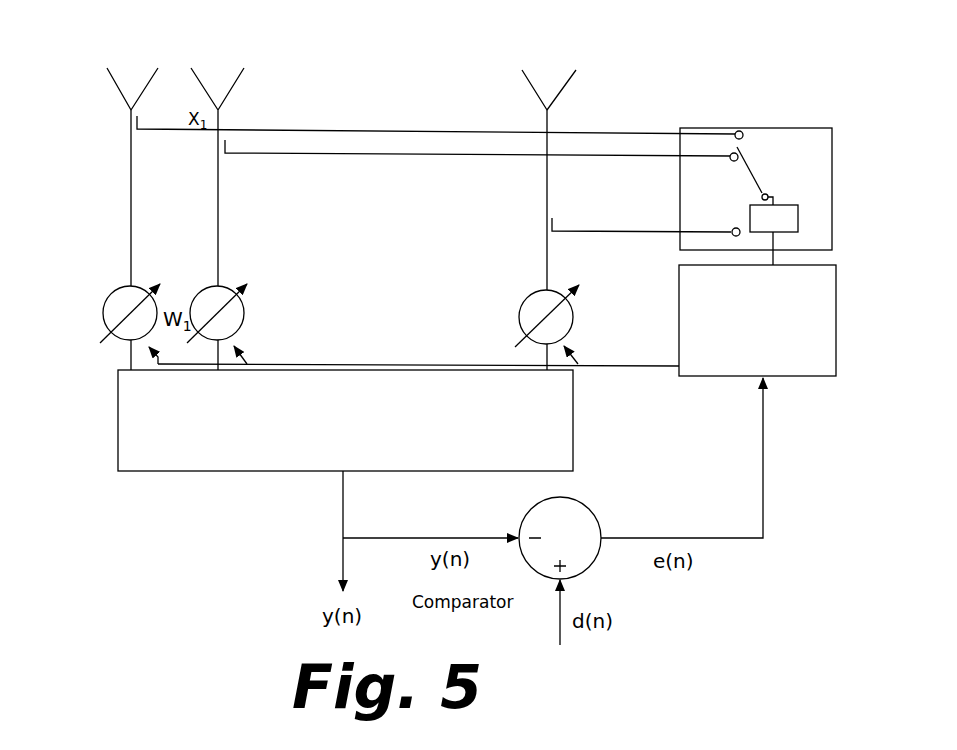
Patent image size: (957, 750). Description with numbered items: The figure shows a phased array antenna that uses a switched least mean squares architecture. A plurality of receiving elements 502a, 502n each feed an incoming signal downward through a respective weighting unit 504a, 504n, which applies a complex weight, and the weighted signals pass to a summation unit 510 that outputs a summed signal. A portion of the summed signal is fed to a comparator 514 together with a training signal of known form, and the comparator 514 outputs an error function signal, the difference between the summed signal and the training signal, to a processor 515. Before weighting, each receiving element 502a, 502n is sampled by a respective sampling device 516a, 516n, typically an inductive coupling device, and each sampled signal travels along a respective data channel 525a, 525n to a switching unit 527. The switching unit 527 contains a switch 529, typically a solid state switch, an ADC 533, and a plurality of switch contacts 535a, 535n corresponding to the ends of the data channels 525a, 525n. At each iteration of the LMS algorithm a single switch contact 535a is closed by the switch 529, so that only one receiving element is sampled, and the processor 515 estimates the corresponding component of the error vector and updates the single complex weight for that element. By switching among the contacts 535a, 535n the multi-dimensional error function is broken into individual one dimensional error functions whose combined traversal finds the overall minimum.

The receiving element 502a is at (133, 90).
The receiving element 502n is at (550, 87).
The weighting unit 504a is at (118, 305).
The weighting unit 504n is at (523, 310).
The summation unit 510 is at (138, 423).
The comparator 514 is at (577, 522).
The processor 515 is at (825, 320).
The sampling device 516a is at (128, 128).
The sampling device 516n is at (548, 223).
The data channel 525a is at (396, 128).
The data channel 525n is at (632, 235).
The switching unit 527 is at (751, 153).
The switch 529 is at (758, 173).
The ADC 533 is at (798, 222).
The switch contact 535a is at (737, 131).
The switch contact 535n is at (733, 228).